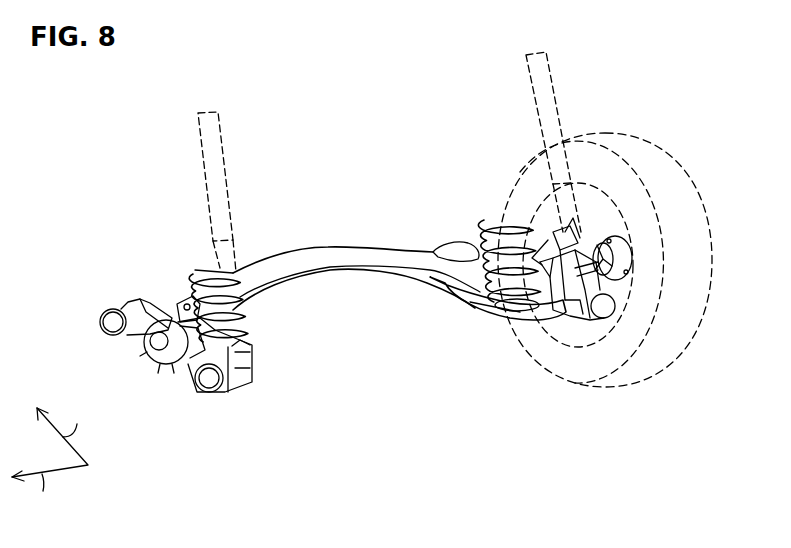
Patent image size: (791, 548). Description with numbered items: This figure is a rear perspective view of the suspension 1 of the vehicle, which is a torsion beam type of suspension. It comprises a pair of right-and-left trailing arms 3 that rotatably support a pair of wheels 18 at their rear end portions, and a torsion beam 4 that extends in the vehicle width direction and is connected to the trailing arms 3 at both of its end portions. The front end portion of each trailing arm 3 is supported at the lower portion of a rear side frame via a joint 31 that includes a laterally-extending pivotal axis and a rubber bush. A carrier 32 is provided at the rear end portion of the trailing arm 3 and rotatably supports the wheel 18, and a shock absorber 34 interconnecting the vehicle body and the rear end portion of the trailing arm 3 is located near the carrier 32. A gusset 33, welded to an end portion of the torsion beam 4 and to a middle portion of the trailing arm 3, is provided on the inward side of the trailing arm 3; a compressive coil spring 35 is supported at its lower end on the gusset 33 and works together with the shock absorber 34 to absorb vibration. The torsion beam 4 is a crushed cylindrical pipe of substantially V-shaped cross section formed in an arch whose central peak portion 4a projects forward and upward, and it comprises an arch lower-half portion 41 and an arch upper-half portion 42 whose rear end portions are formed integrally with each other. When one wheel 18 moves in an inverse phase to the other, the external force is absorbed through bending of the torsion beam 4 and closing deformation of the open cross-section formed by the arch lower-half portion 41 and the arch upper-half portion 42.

The suspension 1 is at (328, 108).
The trailing arm 3 is at (117, 272).
The torsion beam 4 is at (285, 232).
The peak portion 4a is at (323, 273).
The arch lower-half portion 41 is at (373, 273).
The arch upper-half portion 42 is at (370, 257).
The joint 31 is at (108, 308).
The carrier 32 is at (160, 368).
The gusset 33 is at (464, 305).
The shock absorber 34 is at (556, 78).
The compressive coil spring 35 is at (492, 218).
The wheel 18 is at (697, 345).